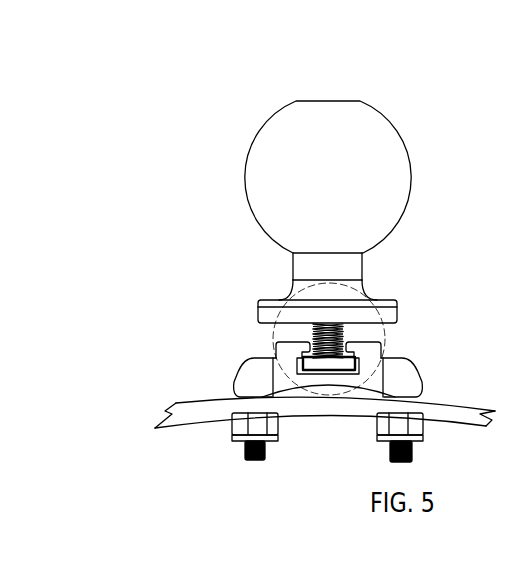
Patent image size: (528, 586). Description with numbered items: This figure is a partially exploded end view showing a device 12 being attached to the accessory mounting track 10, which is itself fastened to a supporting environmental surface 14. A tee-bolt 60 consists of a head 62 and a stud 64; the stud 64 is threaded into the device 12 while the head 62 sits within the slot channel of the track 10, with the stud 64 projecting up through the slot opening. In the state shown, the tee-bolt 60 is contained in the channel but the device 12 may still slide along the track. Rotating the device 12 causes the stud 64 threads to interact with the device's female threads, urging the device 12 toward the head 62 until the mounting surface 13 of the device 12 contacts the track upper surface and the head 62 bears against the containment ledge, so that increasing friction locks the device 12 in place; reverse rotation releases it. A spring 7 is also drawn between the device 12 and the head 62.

The device 12 is at (348, 137).
The mounting surface 13 is at (261, 320).
The stud 64 is at (279, 299).
The tee-bolt 60 is at (353, 328).
The spring 7 is at (385, 338).
The accessory mounting track 10 is at (255, 378).
The head 62 is at (345, 365).
The supporting environmental surface 14 is at (186, 398).